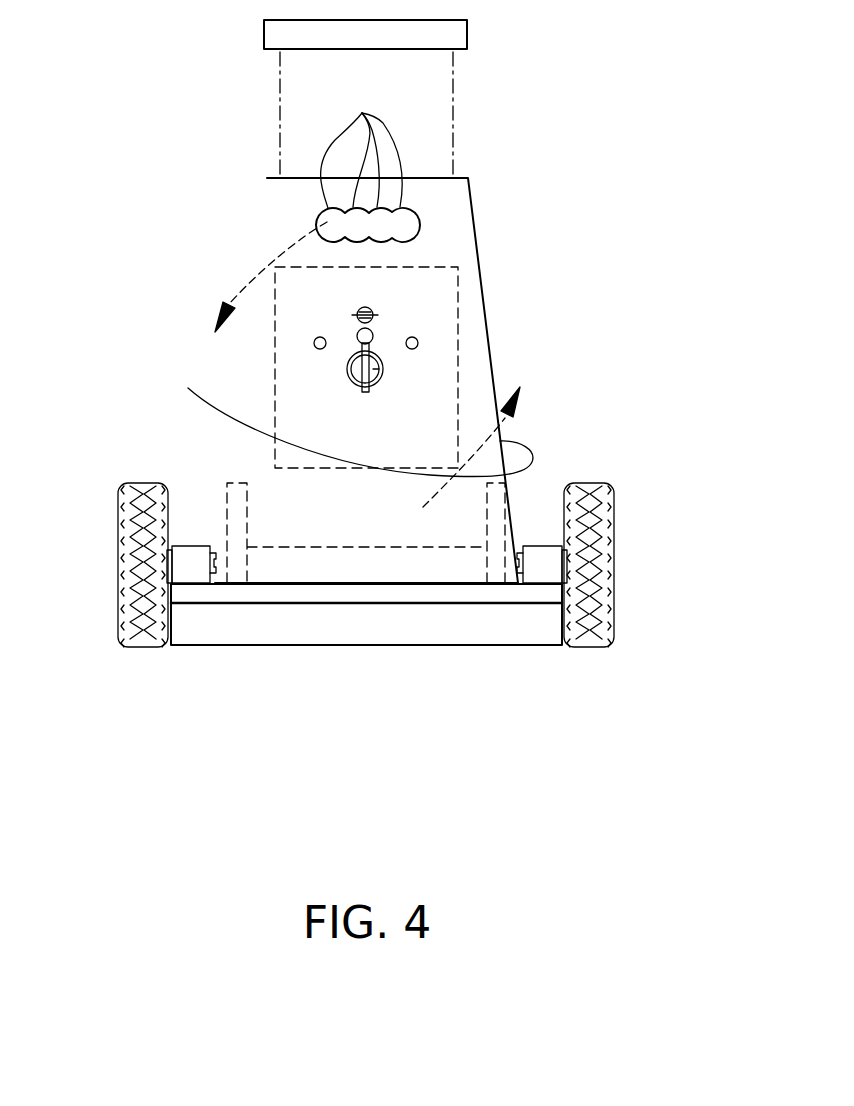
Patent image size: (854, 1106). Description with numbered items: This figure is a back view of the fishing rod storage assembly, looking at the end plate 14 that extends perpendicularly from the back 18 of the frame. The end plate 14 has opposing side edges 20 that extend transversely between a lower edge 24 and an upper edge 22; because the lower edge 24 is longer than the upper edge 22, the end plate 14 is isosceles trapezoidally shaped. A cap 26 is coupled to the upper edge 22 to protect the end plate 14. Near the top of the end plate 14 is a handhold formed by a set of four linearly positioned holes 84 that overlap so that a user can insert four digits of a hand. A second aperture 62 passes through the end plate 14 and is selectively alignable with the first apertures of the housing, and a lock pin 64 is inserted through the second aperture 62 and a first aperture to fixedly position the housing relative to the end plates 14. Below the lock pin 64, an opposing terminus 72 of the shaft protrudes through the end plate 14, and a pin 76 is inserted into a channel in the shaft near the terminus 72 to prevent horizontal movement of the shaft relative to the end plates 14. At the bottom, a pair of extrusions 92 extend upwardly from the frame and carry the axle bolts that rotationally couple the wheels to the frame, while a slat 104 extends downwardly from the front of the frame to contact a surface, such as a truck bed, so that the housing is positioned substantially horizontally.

The end plate 14 is at (260, 208).
The back 18 is at (197, 568).
The opposing side edges 20 is at (242, 373).
The upper edge 22 is at (267, 178).
The lower edge 24 is at (355, 548).
The cap 26 is at (457, 35).
The second aperture 62 is at (370, 310).
The lock pin 64 is at (376, 322).
The opposing terminus 72 is at (383, 370).
The pin 76 is at (357, 337).
The linearly positioned holes 84 is at (368, 160).
The extrusion 92 is at (366, 653).
The slat 104 is at (187, 633).